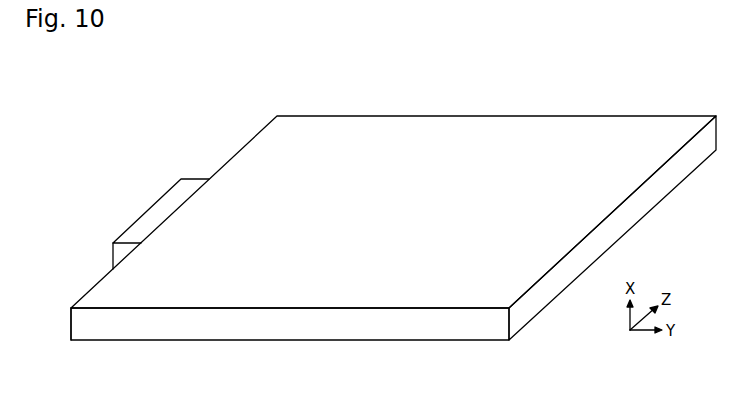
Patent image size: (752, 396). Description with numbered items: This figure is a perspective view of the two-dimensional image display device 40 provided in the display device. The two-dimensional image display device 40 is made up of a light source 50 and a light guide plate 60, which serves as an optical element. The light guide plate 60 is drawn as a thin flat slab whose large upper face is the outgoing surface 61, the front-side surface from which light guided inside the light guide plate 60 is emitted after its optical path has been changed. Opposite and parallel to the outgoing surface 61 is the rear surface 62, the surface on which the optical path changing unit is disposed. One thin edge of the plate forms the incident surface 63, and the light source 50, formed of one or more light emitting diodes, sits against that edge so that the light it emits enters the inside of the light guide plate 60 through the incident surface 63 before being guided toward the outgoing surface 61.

The two-dimensional image display device 40 is at (383, 231).
The light source 50 is at (152, 207).
The light guide plate 60 is at (383, 231).
The outgoing surface 61 is at (445, 132).
The rear surface 62 is at (444, 341).
The incident surface 63 is at (71, 325).